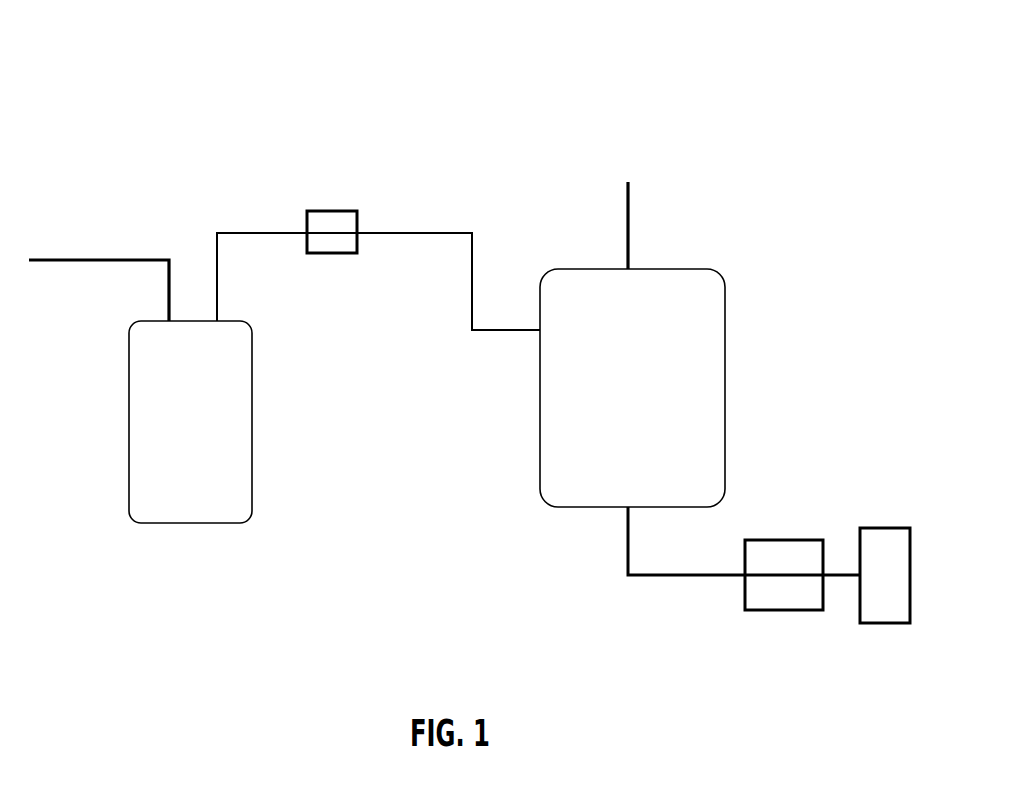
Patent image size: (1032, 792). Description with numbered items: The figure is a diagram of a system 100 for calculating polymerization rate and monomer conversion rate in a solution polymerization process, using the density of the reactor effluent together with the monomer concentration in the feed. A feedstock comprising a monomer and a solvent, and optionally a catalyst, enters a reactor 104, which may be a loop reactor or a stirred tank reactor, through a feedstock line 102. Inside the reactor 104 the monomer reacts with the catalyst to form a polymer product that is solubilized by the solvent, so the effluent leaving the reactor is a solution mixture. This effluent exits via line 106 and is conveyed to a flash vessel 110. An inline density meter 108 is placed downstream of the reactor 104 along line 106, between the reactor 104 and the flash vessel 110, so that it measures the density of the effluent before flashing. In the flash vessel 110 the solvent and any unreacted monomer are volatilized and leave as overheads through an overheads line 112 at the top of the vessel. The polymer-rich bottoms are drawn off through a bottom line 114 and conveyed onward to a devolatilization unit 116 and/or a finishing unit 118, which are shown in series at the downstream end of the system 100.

The system 100 is at (138, 60).
The feedstock line 102 is at (120, 258).
The reactor 104 is at (129, 405).
The line 106 is at (238, 228).
The inline density meter 108 is at (332, 208).
The flash vessel 110 is at (540, 405).
The overheads line 112 is at (632, 210).
The bottom line 114 is at (625, 552).
The devolatilization unit 116 is at (777, 537).
The finishing unit 118 is at (882, 527).